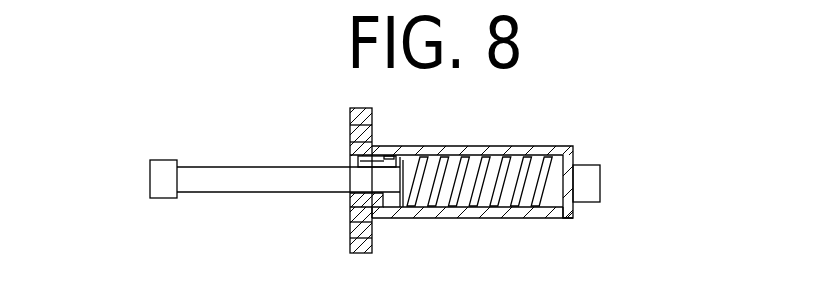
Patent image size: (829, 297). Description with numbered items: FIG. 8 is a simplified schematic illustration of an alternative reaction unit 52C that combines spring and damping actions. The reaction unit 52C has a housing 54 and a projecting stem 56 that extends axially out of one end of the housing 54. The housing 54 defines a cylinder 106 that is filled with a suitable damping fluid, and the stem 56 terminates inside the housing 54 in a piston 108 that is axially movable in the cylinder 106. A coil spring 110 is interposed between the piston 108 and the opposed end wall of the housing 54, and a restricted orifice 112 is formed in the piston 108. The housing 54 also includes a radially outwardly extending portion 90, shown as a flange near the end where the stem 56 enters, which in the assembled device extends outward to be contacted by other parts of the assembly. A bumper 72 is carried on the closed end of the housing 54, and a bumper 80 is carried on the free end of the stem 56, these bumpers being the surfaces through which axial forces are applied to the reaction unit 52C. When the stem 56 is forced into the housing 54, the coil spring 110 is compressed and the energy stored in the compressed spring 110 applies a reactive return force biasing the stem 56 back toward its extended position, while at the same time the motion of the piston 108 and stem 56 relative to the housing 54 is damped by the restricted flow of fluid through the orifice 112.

The bumper 80 is at (158, 180).
The stem 56 is at (223, 173).
The radially outwardly extending portion 90 is at (352, 110).
The restricted orifice 112 is at (358, 156).
The reaction unit 52C is at (542, 147).
The housing 54 is at (532, 220).
The piston 108 is at (390, 197).
The coil spring 110 is at (450, 195).
The cylinder 106 is at (455, 165).
The bumper 72 is at (587, 180).